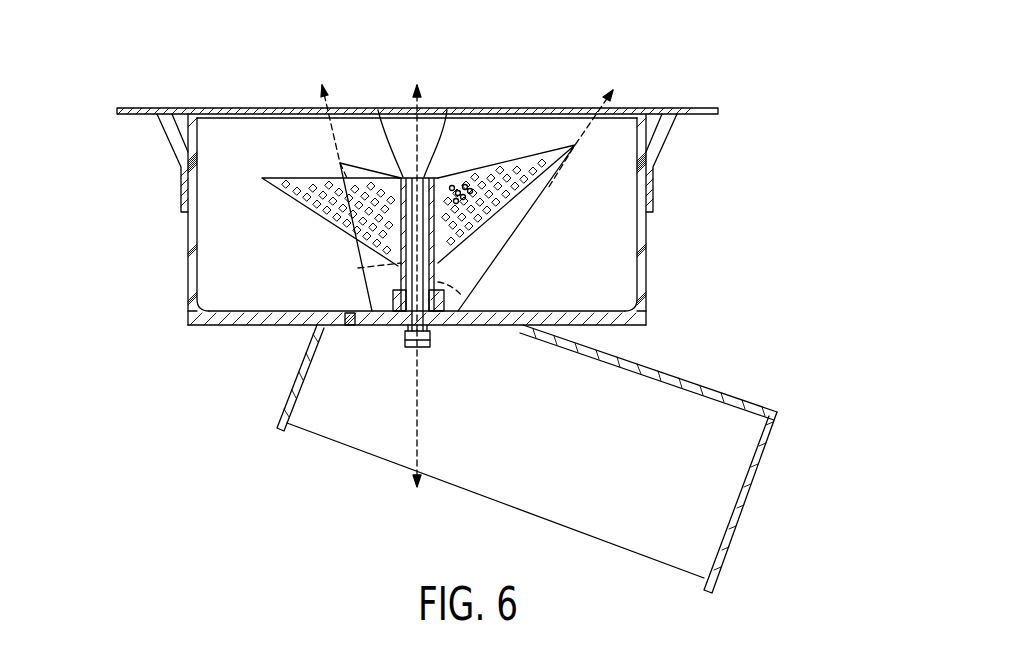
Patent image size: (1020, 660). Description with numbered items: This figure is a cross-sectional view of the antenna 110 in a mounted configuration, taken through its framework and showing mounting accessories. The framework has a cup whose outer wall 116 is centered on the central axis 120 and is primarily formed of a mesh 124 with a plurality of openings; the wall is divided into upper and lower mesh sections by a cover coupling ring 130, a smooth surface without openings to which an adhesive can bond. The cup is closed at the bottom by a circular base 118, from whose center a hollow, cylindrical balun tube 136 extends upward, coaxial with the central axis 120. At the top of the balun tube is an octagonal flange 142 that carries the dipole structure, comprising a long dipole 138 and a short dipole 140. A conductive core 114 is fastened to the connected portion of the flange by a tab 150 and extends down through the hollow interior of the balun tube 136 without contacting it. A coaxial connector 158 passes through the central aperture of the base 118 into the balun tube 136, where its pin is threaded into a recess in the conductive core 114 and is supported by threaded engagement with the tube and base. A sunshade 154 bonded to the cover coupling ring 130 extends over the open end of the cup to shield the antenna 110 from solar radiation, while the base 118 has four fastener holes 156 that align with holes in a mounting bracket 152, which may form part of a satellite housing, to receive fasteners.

The antenna 110 is at (105, 66).
The conductive core 114 is at (447, 110).
The outer wall 116 is at (645, 233).
The circular base 118 is at (640, 305).
The central axis 120 is at (420, 455).
The mesh 124 is at (645, 260).
The cover coupling ring 130 is at (642, 198).
The balun tube 136 is at (395, 296).
The long dipole 138 is at (527, 160).
The short dipole 140 is at (263, 185).
The octagonal flange 142 is at (443, 177).
The tab 150 is at (378, 110).
The mounting bracket 152 is at (740, 397).
The sunshade 154 is at (663, 117).
The fastener holes 156 is at (350, 326).
The coaxial connector 158 is at (430, 343).